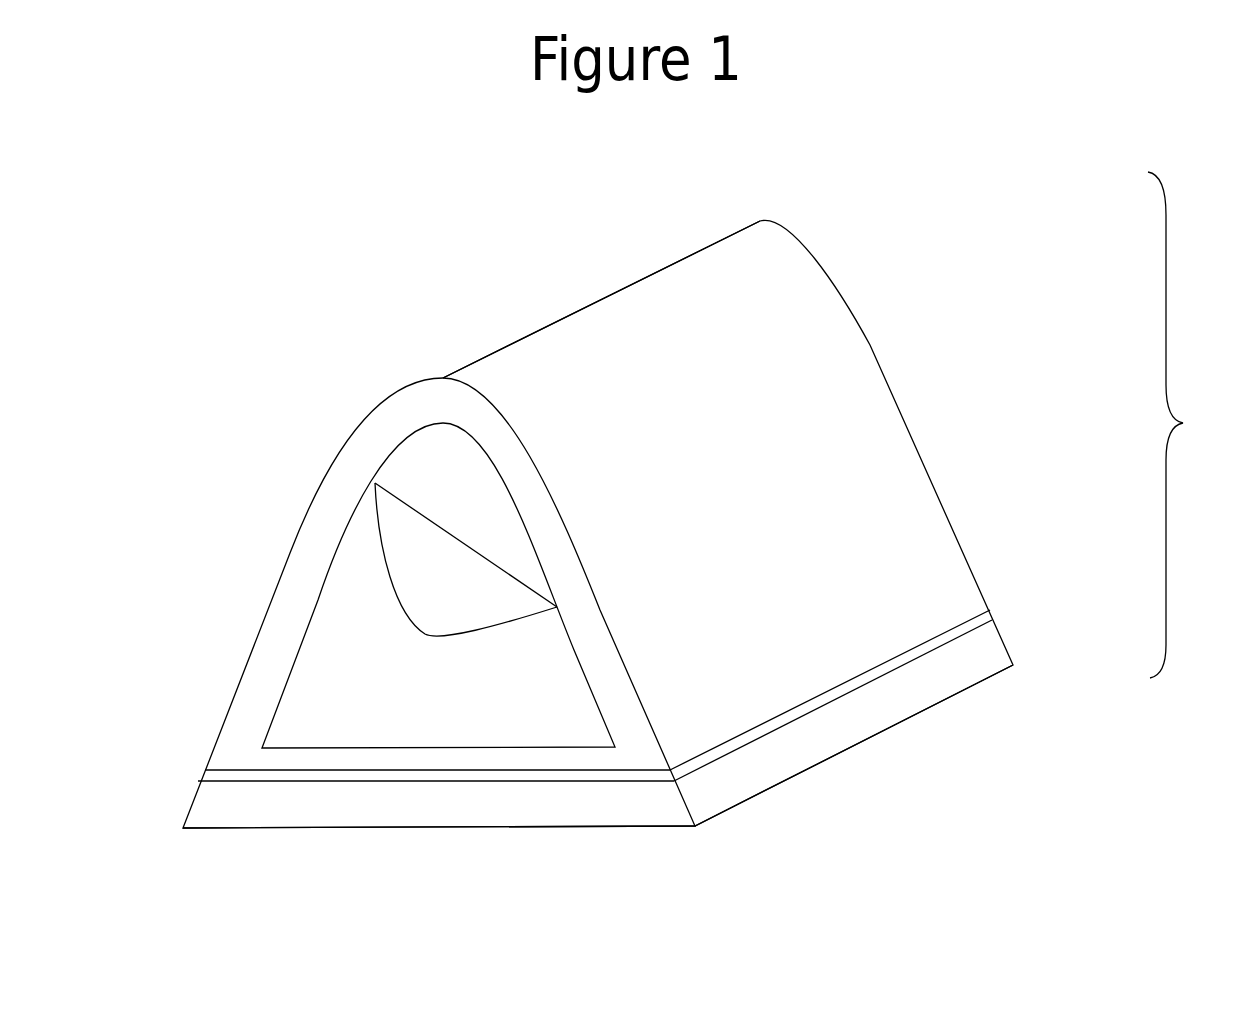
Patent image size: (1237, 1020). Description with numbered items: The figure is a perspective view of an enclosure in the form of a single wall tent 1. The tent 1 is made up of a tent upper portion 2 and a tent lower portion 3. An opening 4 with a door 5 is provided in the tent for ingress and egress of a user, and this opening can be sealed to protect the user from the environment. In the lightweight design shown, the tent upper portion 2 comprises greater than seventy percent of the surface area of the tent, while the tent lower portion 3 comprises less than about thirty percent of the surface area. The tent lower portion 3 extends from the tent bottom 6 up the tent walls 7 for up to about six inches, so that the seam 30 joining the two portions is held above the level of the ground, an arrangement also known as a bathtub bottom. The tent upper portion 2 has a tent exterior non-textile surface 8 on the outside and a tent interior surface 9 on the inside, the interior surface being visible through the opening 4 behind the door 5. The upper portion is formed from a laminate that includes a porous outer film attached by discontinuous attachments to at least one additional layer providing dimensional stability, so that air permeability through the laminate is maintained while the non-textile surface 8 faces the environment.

The single wall tent 1 is at (592, 298).
The tent upper portion 2 is at (820, 265).
The tent lower portion 3 is at (1003, 643).
The opening 4 is at (432, 459).
The door 5 is at (362, 553).
The tent bottom 6 is at (718, 817).
The tent walls 7 is at (1188, 425).
The tent exterior non-textile surface 8 is at (728, 412).
The tent interior surface 9 is at (433, 573).
The seam 30 is at (238, 770).